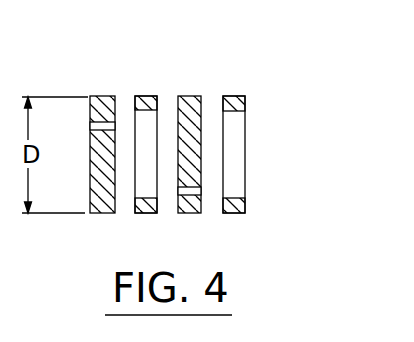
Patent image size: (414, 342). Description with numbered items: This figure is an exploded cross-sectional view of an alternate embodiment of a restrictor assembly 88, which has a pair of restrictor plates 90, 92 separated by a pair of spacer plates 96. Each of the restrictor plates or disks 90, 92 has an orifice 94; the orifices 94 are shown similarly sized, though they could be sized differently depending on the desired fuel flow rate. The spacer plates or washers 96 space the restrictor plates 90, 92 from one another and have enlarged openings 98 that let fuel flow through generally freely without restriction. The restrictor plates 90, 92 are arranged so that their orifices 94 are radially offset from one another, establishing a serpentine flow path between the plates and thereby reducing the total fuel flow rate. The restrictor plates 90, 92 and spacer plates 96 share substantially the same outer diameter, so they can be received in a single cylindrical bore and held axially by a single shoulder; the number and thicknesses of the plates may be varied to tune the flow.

The restrictor assembly 88 is at (215, 77).
The restrictor plate 90 is at (188, 96).
The restrictor plate 92 is at (97, 96).
The orifice 94 is at (90, 125).
The spacer plate 96 is at (143, 96).
The enlarged opening 98 is at (137, 195).